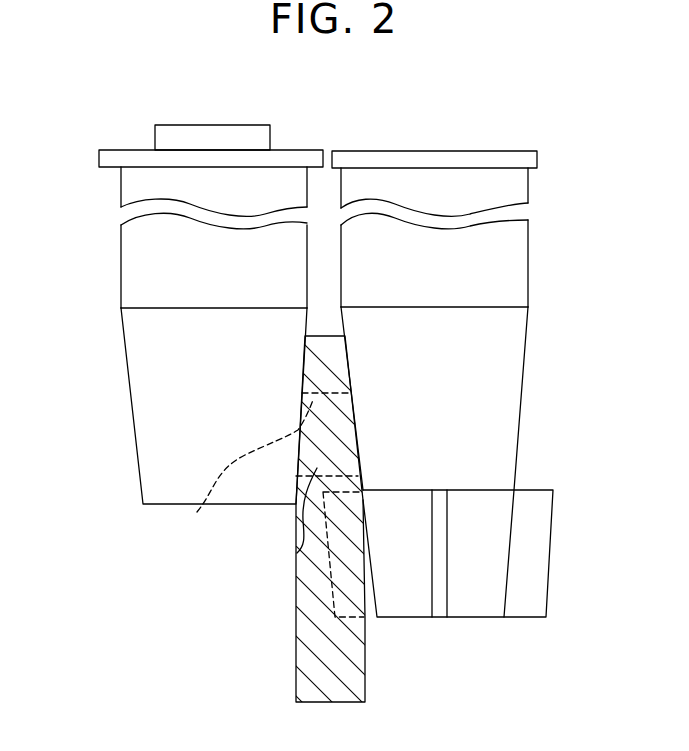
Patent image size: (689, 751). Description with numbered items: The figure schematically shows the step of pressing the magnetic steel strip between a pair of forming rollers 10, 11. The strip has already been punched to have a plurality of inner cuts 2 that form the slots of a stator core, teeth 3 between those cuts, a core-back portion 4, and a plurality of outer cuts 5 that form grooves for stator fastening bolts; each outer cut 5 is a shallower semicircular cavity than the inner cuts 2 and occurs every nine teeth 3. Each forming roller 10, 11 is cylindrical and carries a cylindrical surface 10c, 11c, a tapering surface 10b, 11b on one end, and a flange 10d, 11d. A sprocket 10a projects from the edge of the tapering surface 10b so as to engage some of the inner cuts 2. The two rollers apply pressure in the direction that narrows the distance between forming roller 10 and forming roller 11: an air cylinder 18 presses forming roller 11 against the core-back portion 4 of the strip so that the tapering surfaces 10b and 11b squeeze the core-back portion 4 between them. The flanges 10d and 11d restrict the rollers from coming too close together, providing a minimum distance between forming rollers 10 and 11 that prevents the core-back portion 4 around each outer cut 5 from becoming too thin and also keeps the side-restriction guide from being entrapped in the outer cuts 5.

The inner cuts 2 is at (333, 610).
The teeth 3 is at (315, 672).
The core-back portion 4 is at (296, 553).
The outer cuts 5 is at (249, 471).
The forming roller 10 is at (544, 297).
The sprocket 10a is at (533, 505).
The tapering surface 10b is at (514, 393).
The cylindrical surface 10c is at (513, 244).
The flange 10d is at (535, 160).
The forming roller 11 is at (102, 290).
The tapering surface 11b is at (148, 393).
The cylindrical surface 11c is at (138, 248).
The flange 11d is at (310, 157).
The air cylinder 18 is at (217, 132).